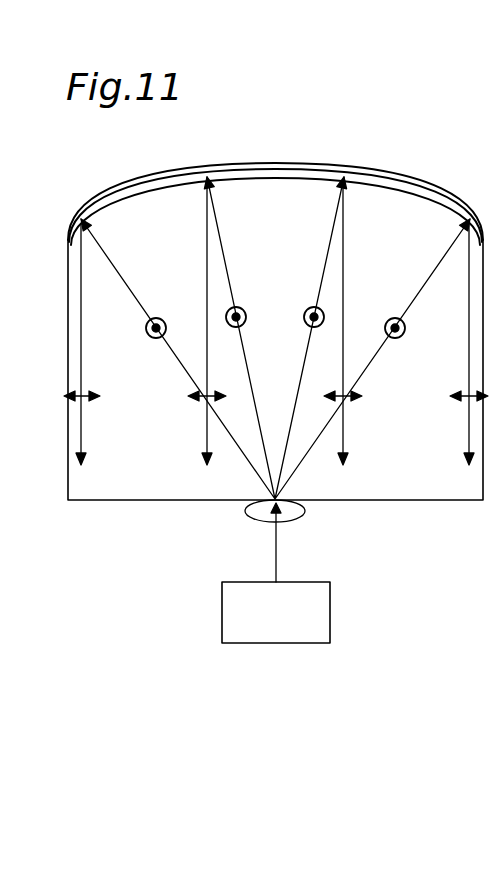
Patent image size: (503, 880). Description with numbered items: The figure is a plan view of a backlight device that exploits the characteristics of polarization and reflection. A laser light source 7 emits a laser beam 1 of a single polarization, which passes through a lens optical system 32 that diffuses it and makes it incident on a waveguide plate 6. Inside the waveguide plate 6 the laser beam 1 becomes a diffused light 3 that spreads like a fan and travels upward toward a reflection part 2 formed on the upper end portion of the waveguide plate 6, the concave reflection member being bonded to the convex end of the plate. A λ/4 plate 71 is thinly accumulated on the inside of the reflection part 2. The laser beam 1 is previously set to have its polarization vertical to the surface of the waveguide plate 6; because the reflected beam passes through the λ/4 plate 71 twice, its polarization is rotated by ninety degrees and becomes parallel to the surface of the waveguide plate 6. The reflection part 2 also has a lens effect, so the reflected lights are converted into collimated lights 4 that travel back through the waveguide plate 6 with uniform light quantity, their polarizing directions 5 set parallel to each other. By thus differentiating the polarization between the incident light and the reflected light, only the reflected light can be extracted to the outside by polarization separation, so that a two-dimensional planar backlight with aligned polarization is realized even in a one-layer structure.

The laser beam 1 is at (275, 562).
The reflection part 2 is at (337, 167).
The diffused light 3 is at (102, 256).
The collimated light 4 is at (82, 295).
The polarizing direction 5 is at (68, 387).
The waveguide plate 6 is at (445, 500).
The laser light source 7 is at (331, 605).
The lens optical system 32 is at (306, 512).
The λ/4 plate 71 is at (422, 190).